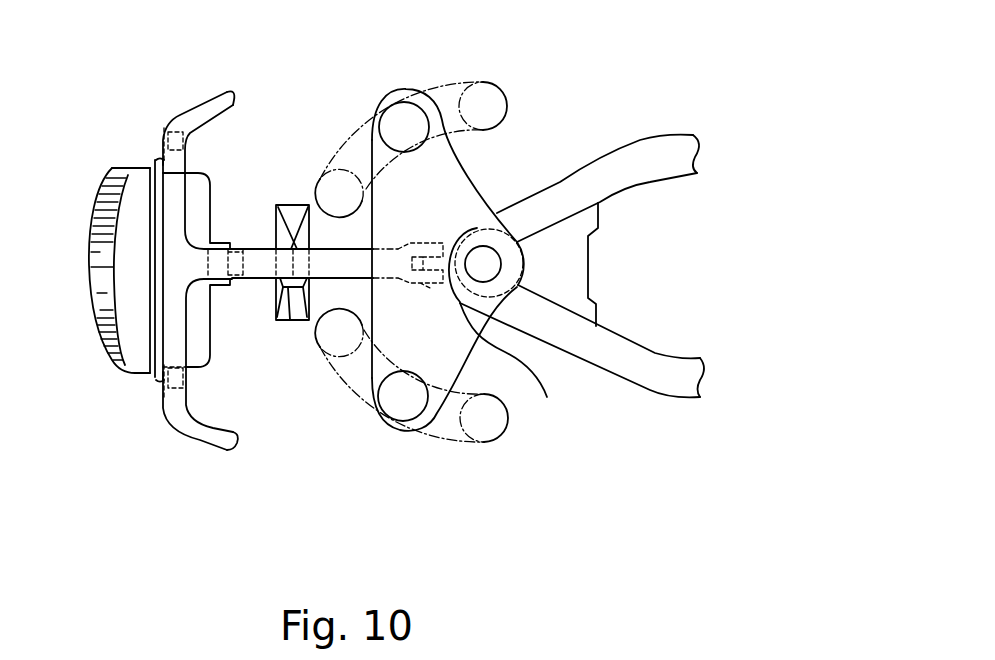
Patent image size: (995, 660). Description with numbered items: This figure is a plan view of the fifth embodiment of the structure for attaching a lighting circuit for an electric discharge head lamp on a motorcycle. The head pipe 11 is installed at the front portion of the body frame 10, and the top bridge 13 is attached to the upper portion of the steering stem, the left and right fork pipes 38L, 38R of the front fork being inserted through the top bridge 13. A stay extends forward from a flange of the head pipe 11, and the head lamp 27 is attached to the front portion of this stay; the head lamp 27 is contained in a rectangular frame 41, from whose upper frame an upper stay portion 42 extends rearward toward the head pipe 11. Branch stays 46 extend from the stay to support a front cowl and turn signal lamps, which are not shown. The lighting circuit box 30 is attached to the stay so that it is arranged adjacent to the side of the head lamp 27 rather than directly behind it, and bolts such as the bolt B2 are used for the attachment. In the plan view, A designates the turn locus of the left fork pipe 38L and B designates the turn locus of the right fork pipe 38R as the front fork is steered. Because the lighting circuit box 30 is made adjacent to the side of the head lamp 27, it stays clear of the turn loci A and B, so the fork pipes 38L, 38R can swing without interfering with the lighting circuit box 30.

The body frame 10 is at (610, 378).
The head pipe 11 is at (547, 397).
The top bridge 13 is at (474, 186).
The head lamp 27 is at (100, 200).
The lighting circuit box 30 is at (293, 207).
The right fork pipe 38R is at (403, 102).
The left fork pipe 38L is at (406, 421).
The rectangular frame 41 is at (157, 321).
The upper stay portion 42 is at (260, 248).
The branch stays 46 is at (196, 107).
The turn locus of the left fork pipe A is at (353, 388).
The turn locus of the right fork pipe B is at (453, 85).
The bolt B2 is at (290, 320).